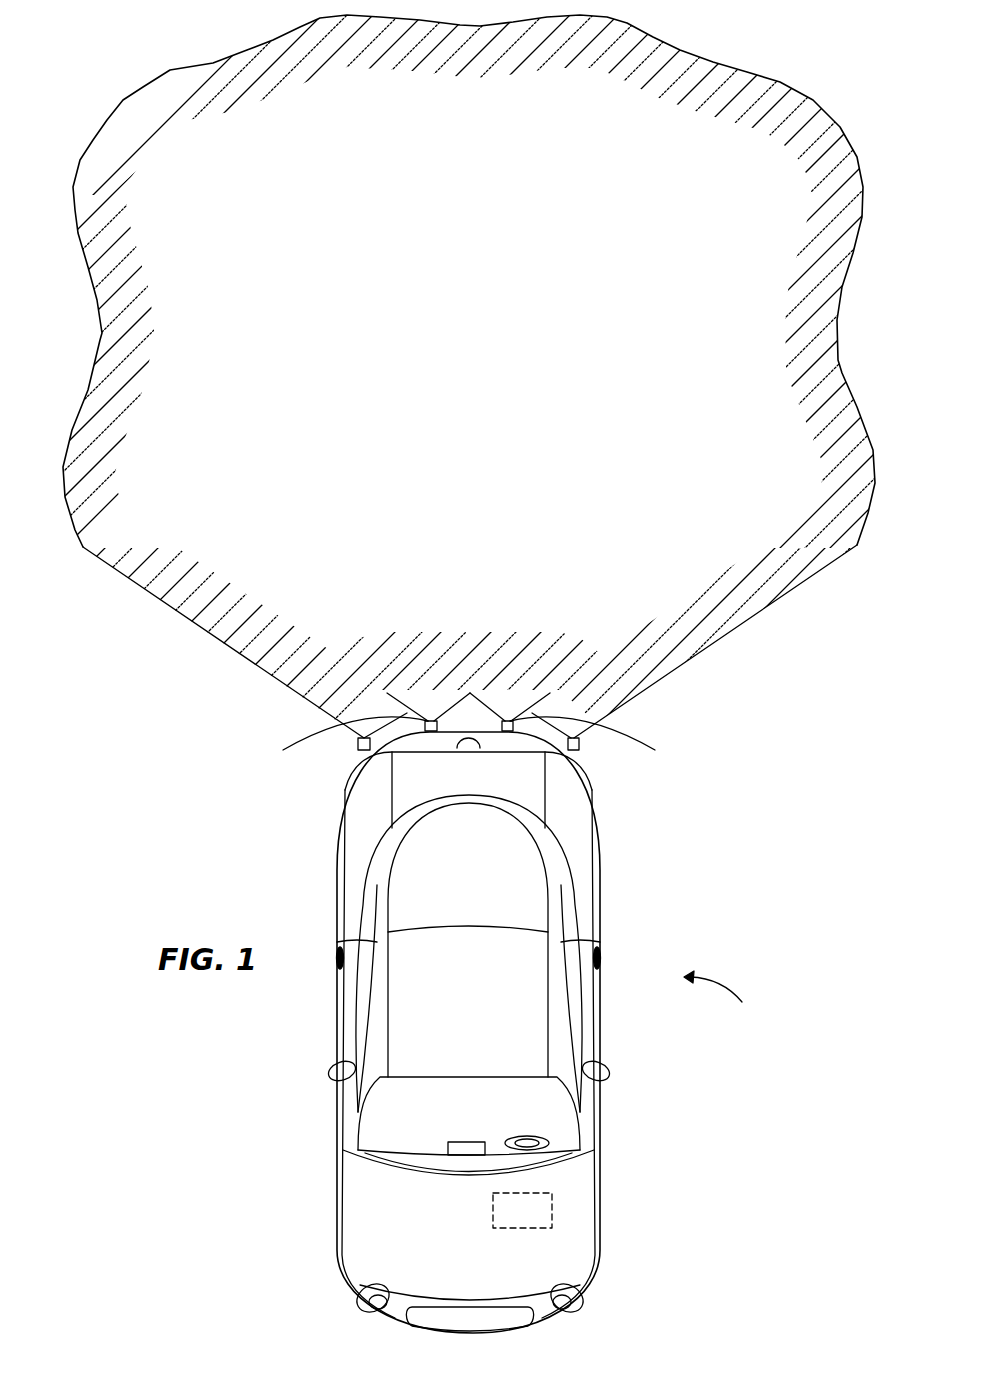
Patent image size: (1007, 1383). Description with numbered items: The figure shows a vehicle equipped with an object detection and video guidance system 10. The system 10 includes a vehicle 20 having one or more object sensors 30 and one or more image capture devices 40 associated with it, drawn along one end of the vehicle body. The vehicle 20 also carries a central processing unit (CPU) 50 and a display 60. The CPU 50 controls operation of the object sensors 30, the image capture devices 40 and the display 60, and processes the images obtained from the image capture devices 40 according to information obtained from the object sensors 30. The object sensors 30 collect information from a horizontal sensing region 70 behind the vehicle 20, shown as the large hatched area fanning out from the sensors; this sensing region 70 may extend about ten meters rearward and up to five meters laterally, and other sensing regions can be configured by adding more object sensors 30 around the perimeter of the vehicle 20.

The system 10 is at (721, 998).
The vehicle 20 is at (360, 1190).
The object sensors 30 is at (470, 657).
The image capture devices 40 is at (471, 748).
The central processing unit (CPU) 50 is at (535, 1226).
The display 60 is at (445, 1147).
The sensing region 70 is at (480, 401).